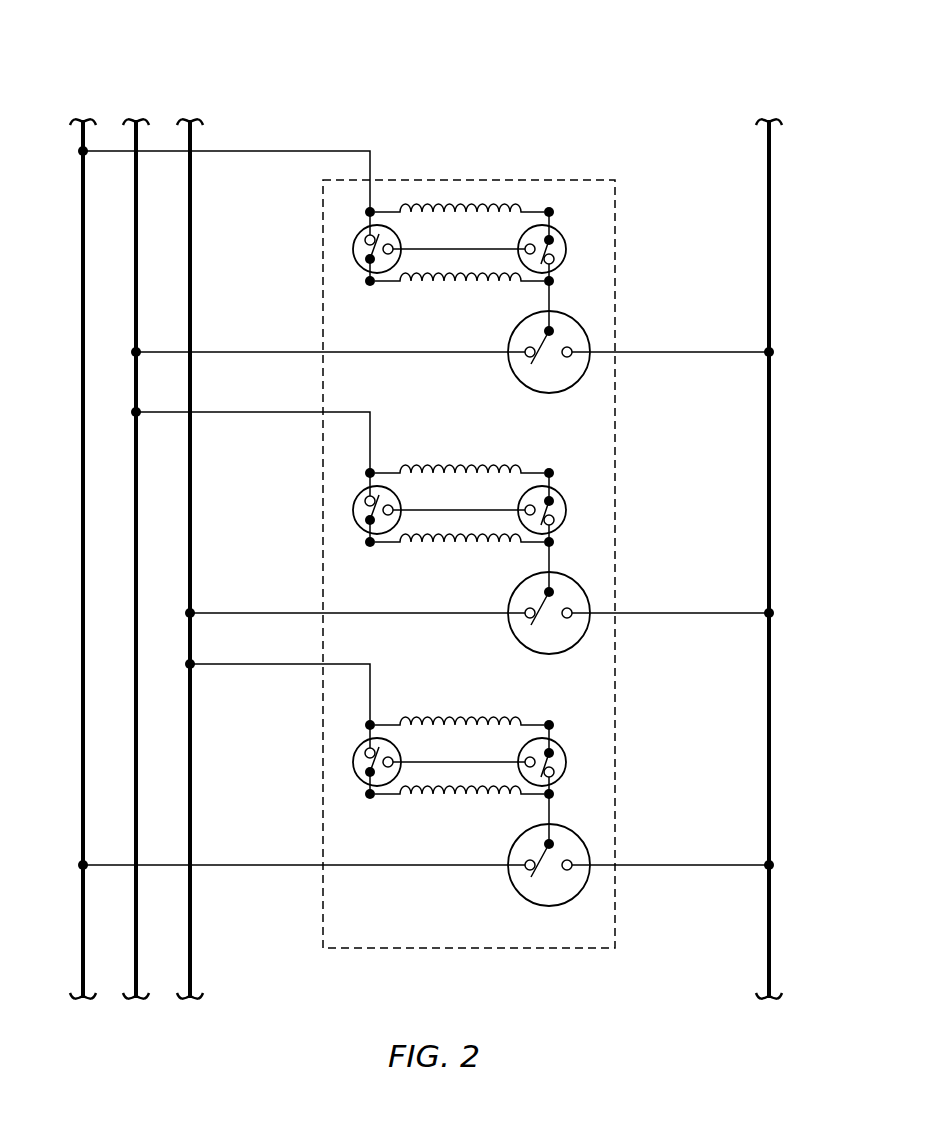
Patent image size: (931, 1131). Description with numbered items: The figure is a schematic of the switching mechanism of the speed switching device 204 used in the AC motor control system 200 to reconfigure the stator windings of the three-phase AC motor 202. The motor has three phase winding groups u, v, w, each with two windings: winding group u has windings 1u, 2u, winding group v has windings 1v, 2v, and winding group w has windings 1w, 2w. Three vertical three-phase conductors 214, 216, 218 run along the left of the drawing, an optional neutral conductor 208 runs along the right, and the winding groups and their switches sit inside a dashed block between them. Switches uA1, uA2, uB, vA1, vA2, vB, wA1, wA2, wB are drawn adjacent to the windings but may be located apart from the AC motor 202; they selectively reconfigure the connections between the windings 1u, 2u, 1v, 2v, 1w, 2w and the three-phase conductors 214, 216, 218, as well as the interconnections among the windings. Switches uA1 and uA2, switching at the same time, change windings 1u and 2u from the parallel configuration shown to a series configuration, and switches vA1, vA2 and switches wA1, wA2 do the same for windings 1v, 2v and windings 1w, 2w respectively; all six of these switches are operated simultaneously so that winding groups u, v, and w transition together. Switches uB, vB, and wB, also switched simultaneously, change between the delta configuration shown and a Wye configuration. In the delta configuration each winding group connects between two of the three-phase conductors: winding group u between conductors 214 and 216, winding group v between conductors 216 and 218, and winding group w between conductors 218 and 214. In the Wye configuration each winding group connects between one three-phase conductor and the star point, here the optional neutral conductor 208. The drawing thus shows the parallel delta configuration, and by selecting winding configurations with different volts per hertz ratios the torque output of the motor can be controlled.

The AC motor control system 200 is at (103, 63).
The AC motor 202 is at (583, 178).
The speed switching device 204 is at (494, 536).
The neutral conductor 208 is at (771, 162).
The three-phase conductor 214 is at (81, 177).
The three-phase conductor 216 is at (134, 208).
The three-phase conductor 218 is at (188, 245).
The winding group u is at (306, 213).
The winding group v is at (306, 474).
The winding group w is at (308, 726).
The winding 1u is at (470, 203).
The winding 2u is at (445, 283).
The winding 1v is at (470, 464).
The winding 2v is at (445, 544).
The winding 1w is at (470, 716).
The winding 2w is at (445, 796).
The switch uA1 is at (353, 250).
The switch uA2 is at (567, 250).
The switch uB is at (589, 366).
The switch vA1 is at (353, 511).
The switch vA2 is at (567, 511).
The switch vB is at (589, 627).
The switch wA1 is at (353, 763).
The switch wA2 is at (567, 763).
The switch wB is at (589, 879).